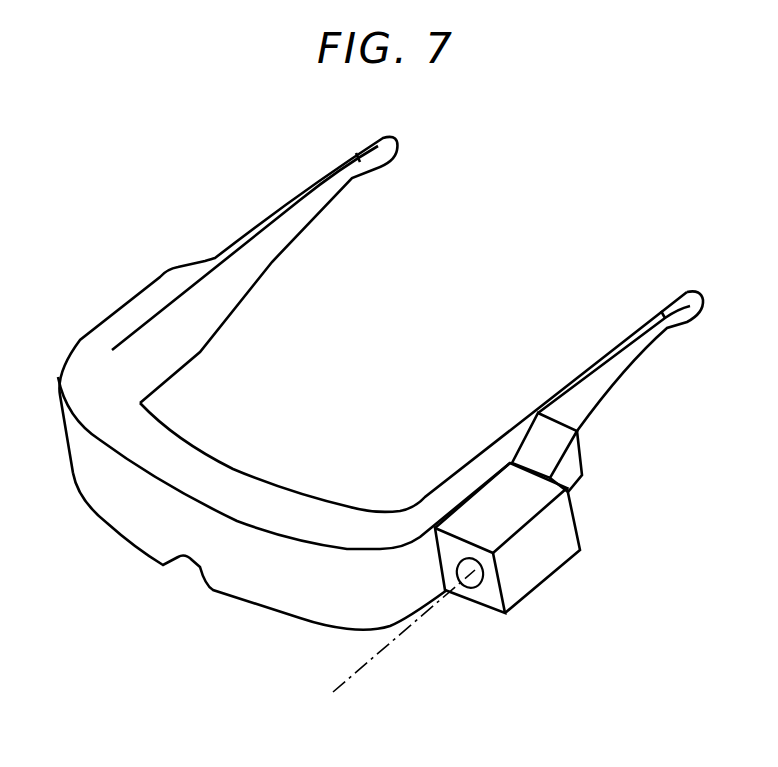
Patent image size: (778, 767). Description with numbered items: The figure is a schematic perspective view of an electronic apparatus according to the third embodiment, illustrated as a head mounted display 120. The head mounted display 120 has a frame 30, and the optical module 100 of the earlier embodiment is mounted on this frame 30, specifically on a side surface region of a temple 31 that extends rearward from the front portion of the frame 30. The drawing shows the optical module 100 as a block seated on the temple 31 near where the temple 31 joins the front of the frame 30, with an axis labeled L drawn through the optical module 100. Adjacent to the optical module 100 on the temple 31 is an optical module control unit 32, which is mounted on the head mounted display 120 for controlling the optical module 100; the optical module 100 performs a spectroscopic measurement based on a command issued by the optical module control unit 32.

The frame 30 is at (238, 466).
The temple 31 is at (573, 381).
The optical module control unit 32 is at (572, 462).
The optical module 100 is at (542, 565).
The head mounted display 120 is at (710, 119).
The optical axis L is at (350, 677).